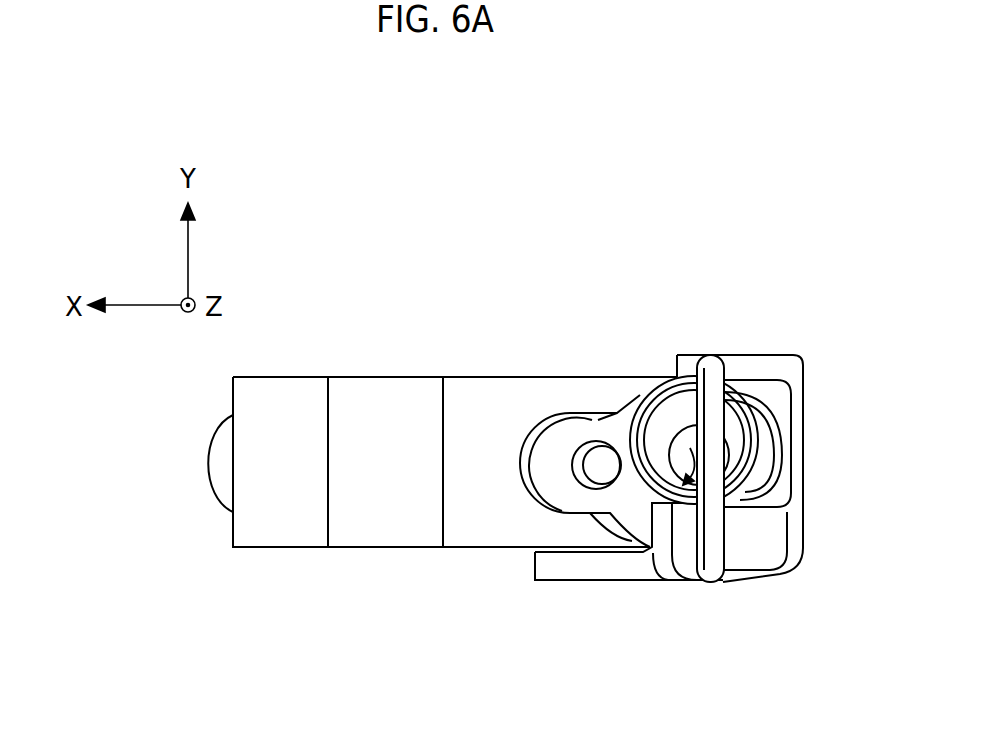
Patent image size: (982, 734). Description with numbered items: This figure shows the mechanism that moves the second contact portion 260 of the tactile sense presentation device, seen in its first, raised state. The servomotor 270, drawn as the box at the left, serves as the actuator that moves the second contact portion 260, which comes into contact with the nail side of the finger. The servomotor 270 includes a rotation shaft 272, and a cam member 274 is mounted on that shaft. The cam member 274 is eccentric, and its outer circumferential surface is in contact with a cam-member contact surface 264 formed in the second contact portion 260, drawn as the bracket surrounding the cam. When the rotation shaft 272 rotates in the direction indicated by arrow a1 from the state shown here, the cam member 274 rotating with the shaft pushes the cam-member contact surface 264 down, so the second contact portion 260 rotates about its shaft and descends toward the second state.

The second contact portion 260 is at (525, 600).
The cam-member contact surface 264 is at (763, 353).
The servomotor 270 is at (295, 377).
The rotation shaft 272 is at (735, 470).
The cam member 274 is at (643, 405).
The arrow a1 is at (682, 463).